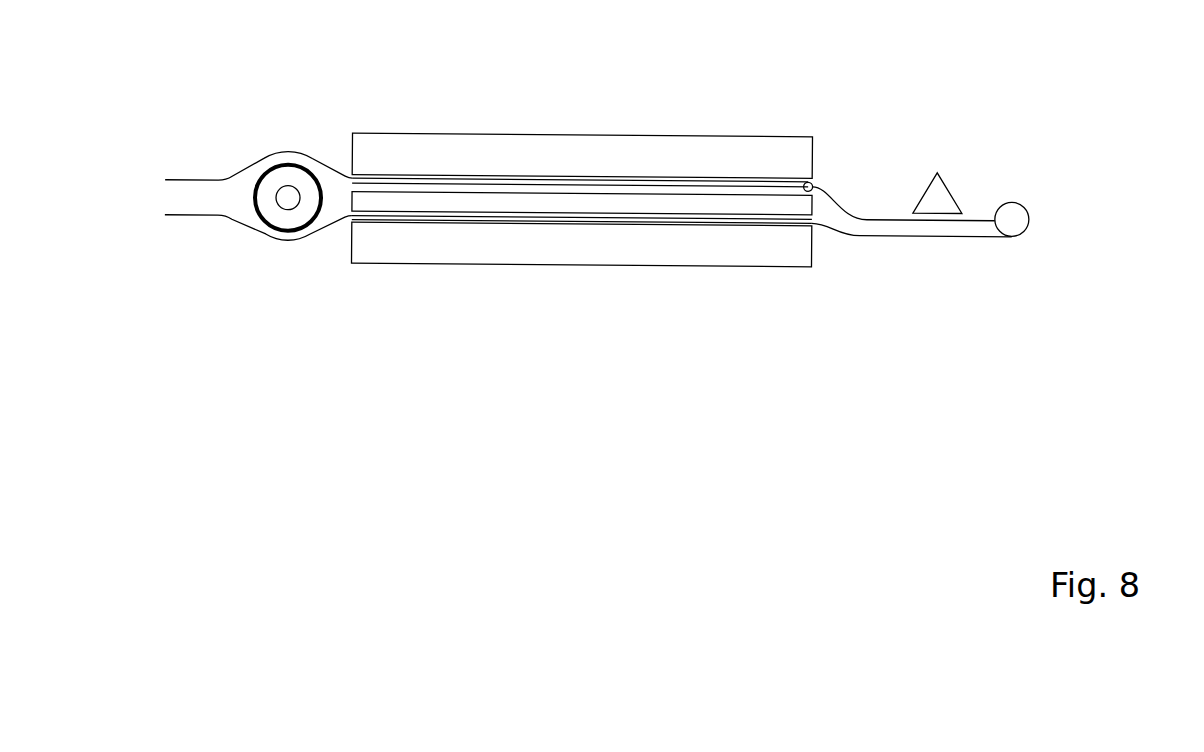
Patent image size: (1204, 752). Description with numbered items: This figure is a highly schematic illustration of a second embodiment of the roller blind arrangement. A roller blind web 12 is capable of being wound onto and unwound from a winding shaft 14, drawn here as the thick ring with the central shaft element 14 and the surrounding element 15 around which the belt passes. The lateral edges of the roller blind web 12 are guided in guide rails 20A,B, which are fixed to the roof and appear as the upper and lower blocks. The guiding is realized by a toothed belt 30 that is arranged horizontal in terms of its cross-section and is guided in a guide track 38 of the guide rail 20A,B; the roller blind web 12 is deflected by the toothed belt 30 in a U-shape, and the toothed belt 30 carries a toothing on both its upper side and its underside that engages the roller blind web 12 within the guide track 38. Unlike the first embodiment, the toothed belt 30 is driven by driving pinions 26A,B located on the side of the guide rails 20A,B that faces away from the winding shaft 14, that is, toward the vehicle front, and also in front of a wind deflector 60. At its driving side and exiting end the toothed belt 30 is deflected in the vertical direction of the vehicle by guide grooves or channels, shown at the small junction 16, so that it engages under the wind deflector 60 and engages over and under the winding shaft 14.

The guide rails 20A,B is at (412, 147).
The toothed belt 30 is at (542, 183).
The guide track 38 is at (717, 182).
The roller blind web 12 is at (663, 190).
The connection point 16 is at (811, 185).
The ring 15 is at (270, 215).
The winding shaft 14 is at (290, 203).
The wind deflector 60 is at (940, 198).
The driving pinions 26A,B is at (1023, 219).